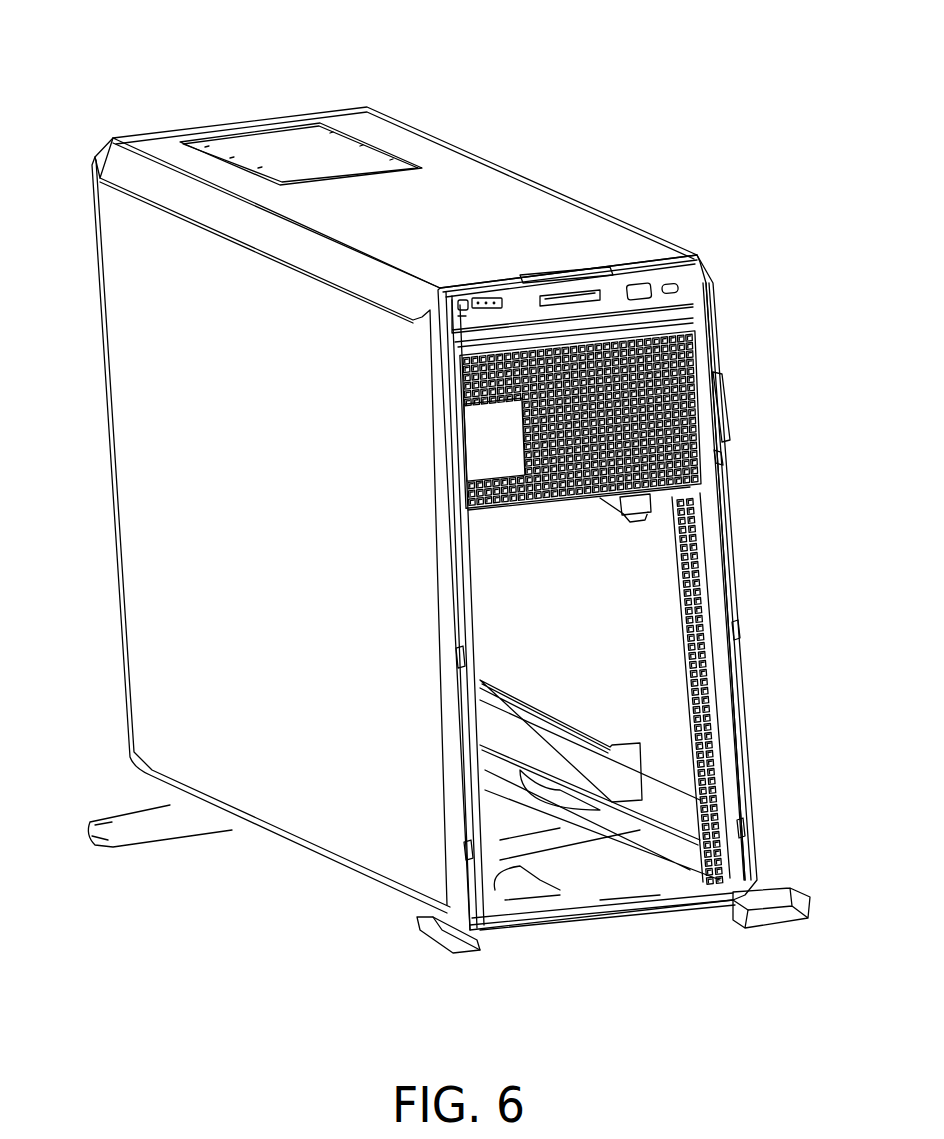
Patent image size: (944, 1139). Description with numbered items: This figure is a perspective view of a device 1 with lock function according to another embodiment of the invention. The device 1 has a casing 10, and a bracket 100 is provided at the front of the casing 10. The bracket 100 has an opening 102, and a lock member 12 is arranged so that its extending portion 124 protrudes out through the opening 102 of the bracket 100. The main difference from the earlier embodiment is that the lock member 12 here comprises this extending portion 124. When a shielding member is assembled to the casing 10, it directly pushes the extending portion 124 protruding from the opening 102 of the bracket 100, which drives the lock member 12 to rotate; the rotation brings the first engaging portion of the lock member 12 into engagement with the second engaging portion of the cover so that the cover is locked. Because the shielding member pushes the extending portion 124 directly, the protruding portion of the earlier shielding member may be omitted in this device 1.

The device with lock function 1 is at (577, 42).
The casing 10 is at (565, 198).
The bracket 100 is at (707, 317).
The opening 102 is at (710, 420).
The lock member 12 is at (725, 433).
The extending portion 124 is at (718, 460).